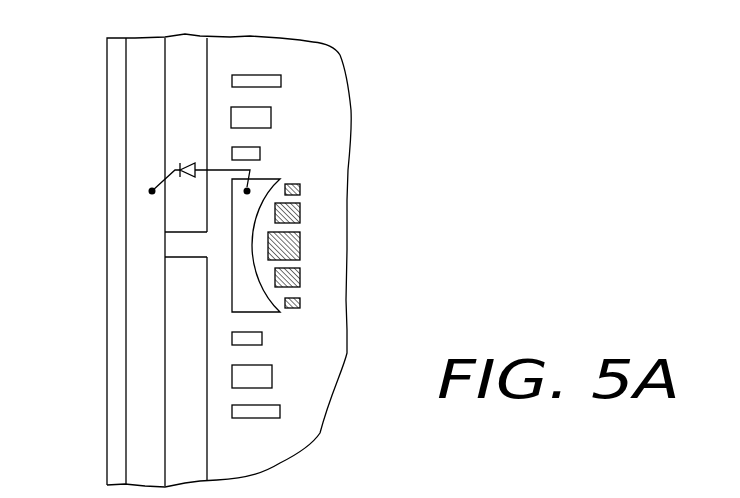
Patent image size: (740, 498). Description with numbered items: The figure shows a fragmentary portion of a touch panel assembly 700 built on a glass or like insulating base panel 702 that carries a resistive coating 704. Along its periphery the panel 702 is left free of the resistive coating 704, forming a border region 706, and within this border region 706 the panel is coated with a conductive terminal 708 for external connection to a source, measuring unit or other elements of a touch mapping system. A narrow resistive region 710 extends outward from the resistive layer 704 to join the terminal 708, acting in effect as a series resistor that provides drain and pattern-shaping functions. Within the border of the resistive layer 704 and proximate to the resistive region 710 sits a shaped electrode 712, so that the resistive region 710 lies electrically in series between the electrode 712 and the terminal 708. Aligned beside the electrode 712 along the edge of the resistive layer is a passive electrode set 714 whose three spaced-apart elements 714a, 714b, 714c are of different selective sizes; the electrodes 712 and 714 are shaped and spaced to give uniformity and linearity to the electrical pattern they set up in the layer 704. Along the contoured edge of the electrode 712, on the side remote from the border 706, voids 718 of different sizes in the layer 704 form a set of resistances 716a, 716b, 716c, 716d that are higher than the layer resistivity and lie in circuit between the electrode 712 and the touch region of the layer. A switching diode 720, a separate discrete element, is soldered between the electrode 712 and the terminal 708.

The touch panel assembly 700 is at (105, 80).
The insulating base panel 702 is at (115, 130).
The resistive coating 704 is at (330, 130).
The border region 706 is at (185, 106).
The conductive terminal 708 is at (132, 188).
The resistive region 710 is at (186, 250).
The shaped electrode 712 is at (262, 303).
The passive electrode set 714 is at (297, 84).
The passive electrode element 714a is at (245, 80).
The passive electrode element 714b is at (265, 118).
The passive electrode element 714c is at (255, 153).
The resistance 716a is at (300, 198).
The resistance 716b is at (300, 228).
The resistance 716c is at (300, 264).
The resistance 716d is at (300, 295).
The voids 718 is at (300, 188).
The switching diode 720 is at (180, 168).